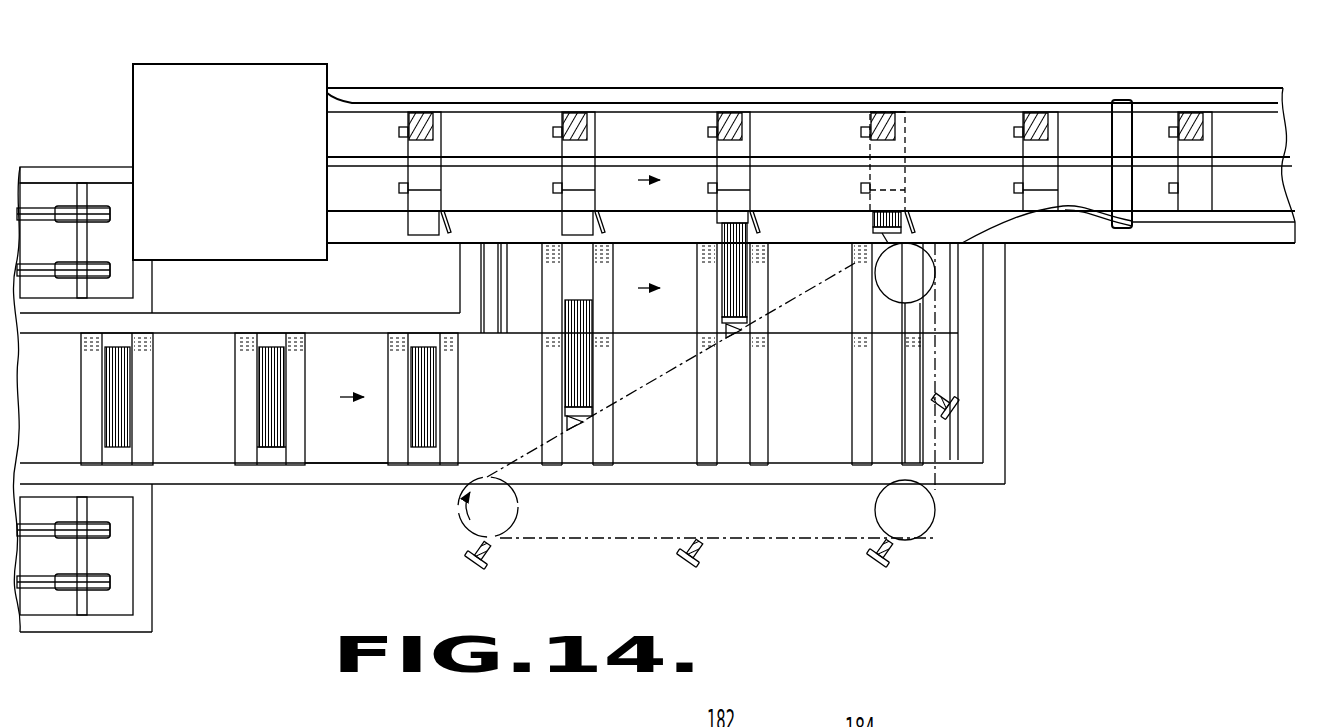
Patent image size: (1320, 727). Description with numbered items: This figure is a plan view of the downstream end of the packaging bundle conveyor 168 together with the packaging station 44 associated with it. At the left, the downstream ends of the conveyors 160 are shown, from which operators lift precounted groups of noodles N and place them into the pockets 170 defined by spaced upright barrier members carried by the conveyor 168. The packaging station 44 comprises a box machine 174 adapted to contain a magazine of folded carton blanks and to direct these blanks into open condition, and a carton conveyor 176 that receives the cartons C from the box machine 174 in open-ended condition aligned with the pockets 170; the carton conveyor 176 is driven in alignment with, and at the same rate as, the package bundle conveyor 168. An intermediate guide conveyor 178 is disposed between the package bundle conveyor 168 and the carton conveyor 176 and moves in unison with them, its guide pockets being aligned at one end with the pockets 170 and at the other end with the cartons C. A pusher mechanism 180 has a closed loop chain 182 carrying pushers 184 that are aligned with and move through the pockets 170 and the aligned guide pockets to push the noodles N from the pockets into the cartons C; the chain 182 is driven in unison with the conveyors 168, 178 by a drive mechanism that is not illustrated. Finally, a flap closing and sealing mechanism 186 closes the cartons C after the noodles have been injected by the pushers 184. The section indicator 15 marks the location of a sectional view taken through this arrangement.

The packaging station 44 is at (318, 526).
The conveyor 160 is at (40, 222).
The box machine 174 is at (246, 177).
The carton conveyor 176 is at (808, 125).
The carton C is at (435, 138).
The nut / workpiece N is at (124, 396).
The pocket 170 is at (270, 453).
The packaging bundle conveyor 168 is at (365, 447).
The intermediate guide conveyor 178 is at (958, 304).
The closed loop chain 182 is at (935, 432).
The pusher mechanism 180 is at (950, 520).
The pusher 184 is at (745, 323).
The flap closing and sealing mechanism 186 is at (1030, 222).
The section line of FIG. 15 is at (542, 55).